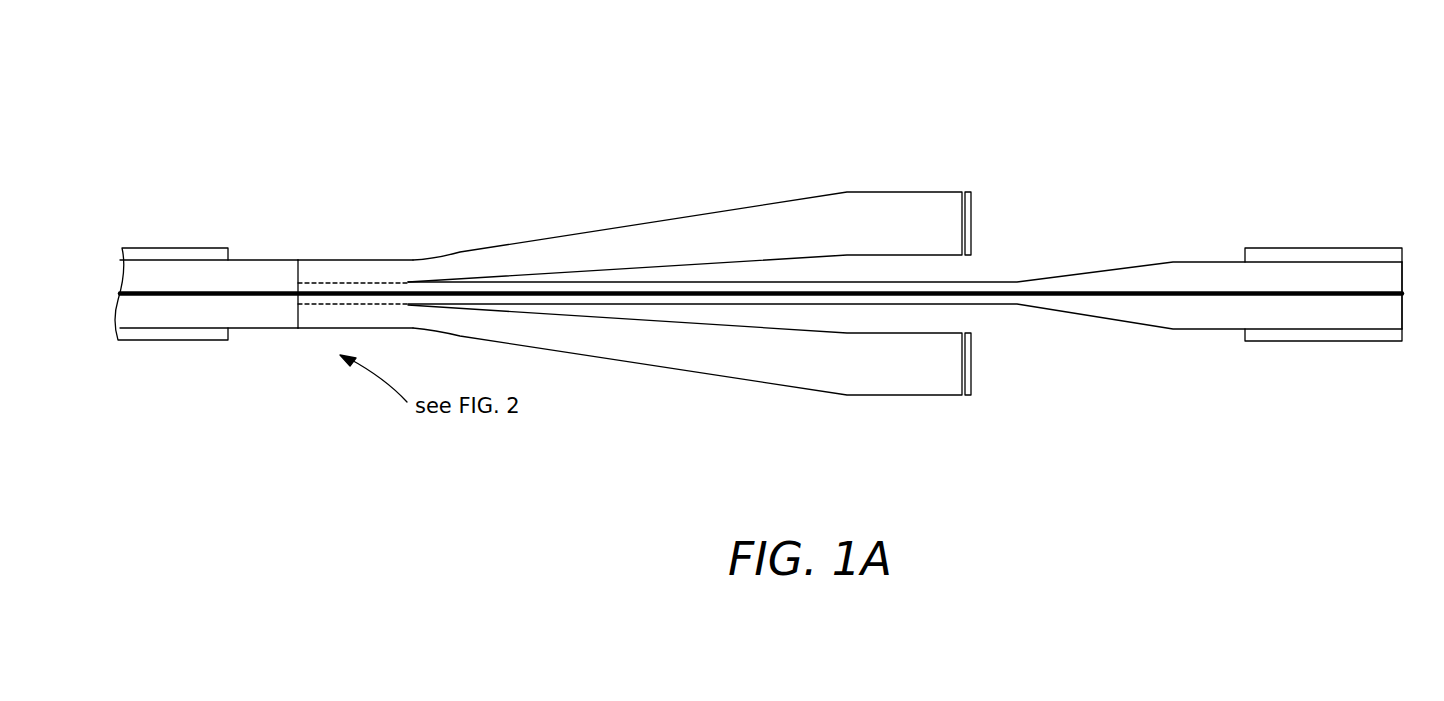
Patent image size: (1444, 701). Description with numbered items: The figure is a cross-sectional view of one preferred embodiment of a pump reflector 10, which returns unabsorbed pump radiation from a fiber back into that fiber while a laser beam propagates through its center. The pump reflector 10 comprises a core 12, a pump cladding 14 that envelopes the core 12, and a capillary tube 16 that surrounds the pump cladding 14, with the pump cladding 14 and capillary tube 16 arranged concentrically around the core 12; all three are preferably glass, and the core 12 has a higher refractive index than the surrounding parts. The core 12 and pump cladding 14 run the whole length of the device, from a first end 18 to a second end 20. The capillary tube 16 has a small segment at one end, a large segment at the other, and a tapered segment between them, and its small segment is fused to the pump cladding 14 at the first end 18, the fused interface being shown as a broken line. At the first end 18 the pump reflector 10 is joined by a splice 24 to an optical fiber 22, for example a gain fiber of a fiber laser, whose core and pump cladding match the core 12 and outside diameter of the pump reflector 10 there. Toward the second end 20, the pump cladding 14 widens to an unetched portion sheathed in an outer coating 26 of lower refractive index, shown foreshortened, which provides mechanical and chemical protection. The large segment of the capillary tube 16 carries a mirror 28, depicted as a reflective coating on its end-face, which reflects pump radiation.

The pump reflector 10 is at (457, 115).
The core 12 is at (1188, 292).
The pump cladding 14 is at (358, 285).
The capillary tube 16 is at (672, 226).
The first end 18 is at (295, 276).
The second end 20 is at (1402, 273).
The optical fiber 22 is at (183, 237).
The splice 24 is at (298, 332).
The outer coating 26 is at (1370, 253).
The mirror 28 is at (972, 200).